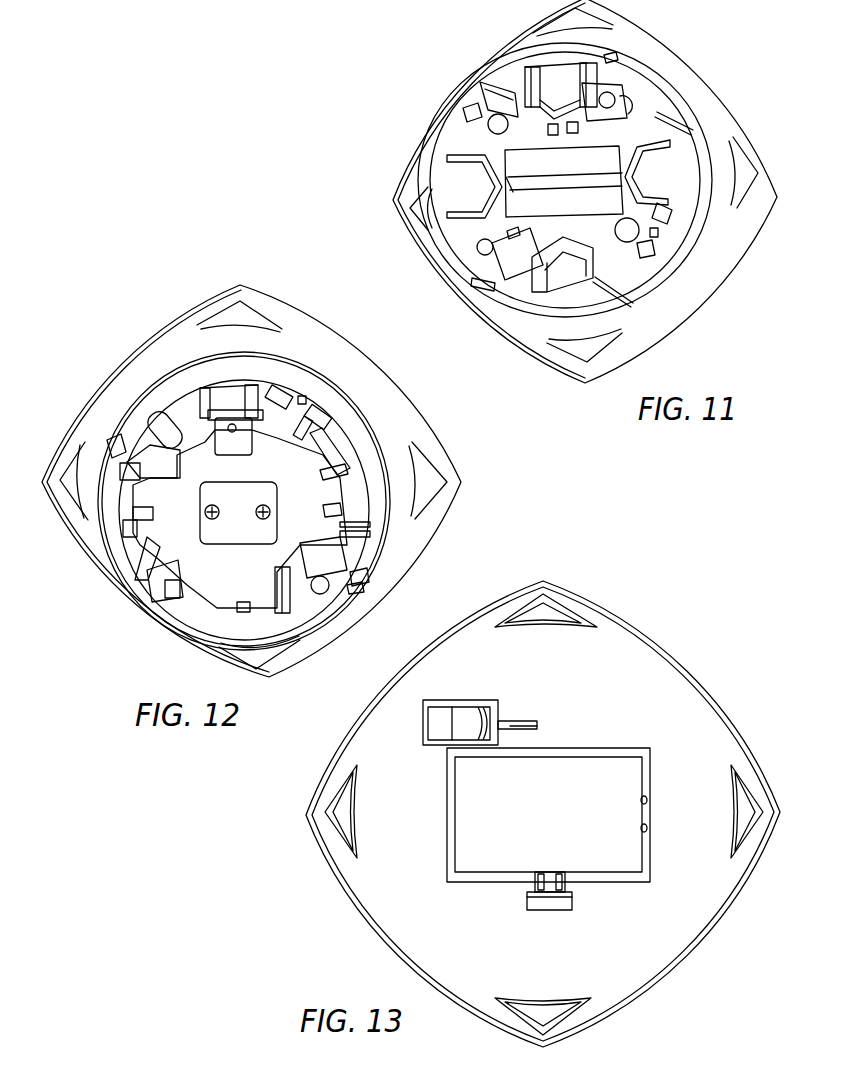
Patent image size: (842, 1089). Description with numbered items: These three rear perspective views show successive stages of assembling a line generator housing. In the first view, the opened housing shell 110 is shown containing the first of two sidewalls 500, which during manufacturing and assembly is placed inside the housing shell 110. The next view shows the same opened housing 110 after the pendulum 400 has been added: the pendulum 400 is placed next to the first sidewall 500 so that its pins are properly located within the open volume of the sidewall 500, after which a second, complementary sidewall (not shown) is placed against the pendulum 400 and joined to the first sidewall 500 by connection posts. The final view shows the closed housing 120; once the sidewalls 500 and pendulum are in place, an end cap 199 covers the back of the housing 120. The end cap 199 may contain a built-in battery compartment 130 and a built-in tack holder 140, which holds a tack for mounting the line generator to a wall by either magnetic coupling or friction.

In FIG. 11, the housing shell 110 is at (693, 272).
In FIG. 12, the housing shell 110 is at (350, 420).
In FIG. 13, the closed housing 120 is at (663, 648).
In FIG. 13, the battery compartment 130 is at (557, 823).
In FIG. 13, the tack holder 140 is at (437, 717).
In FIG. 13, the end cap 199 is at (643, 698).
In FIG. 12, the pendulum 400 is at (250, 574).
In FIG. 11, the sidewall 500 is at (645, 130).
In FIG. 12, the sidewall 500 is at (130, 537).